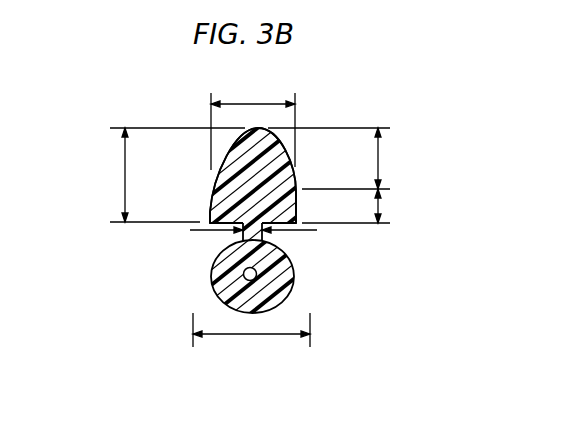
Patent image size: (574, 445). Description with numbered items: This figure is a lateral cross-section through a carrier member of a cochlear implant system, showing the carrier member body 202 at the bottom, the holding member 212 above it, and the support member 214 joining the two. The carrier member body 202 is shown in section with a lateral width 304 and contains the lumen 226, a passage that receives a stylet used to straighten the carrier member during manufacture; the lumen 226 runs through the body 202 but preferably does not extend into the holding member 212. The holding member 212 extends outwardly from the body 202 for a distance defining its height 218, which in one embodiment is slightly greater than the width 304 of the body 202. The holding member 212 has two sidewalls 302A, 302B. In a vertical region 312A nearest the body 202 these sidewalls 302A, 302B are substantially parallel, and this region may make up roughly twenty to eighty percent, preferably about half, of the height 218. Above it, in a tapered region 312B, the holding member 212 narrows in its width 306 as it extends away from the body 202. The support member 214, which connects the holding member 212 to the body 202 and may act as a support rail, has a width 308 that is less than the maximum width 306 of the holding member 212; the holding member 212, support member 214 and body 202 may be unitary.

The carrier member body 202 is at (290, 283).
The holding member 212 is at (243, 128).
The support member 214 is at (263, 241).
The height of the holding member 218 is at (125, 176).
The lumen 226 is at (245, 279).
The sidewall 302A is at (211, 201).
The sidewall 302B is at (297, 217).
The width of the carrier member body 304 is at (250, 334).
The width of the holding member 306 is at (253, 102).
The width of the support member 308 is at (190, 231).
The vertical region 312A is at (378, 207).
The tapered region 312B is at (378, 162).